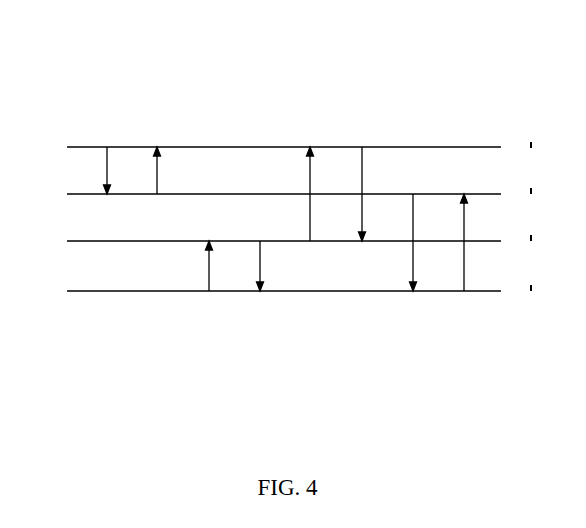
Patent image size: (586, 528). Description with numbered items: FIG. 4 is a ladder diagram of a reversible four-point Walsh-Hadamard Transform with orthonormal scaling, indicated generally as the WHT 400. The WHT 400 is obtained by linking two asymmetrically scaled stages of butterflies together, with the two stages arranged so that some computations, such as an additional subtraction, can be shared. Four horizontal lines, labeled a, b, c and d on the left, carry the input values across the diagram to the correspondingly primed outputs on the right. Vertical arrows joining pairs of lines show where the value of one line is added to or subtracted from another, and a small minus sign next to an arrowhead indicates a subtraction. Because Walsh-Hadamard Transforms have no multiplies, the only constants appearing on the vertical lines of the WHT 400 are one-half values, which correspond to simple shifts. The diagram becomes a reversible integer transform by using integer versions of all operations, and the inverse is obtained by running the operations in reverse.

The reversible 4-point Walsh-Hadamard Transform with orthonormal scaling 400 is at (268, 60).
The first input line a is at (271, 147).
The second input line b is at (271, 193).
The third input line c is at (272, 240).
The fourth input line d is at (271, 290).